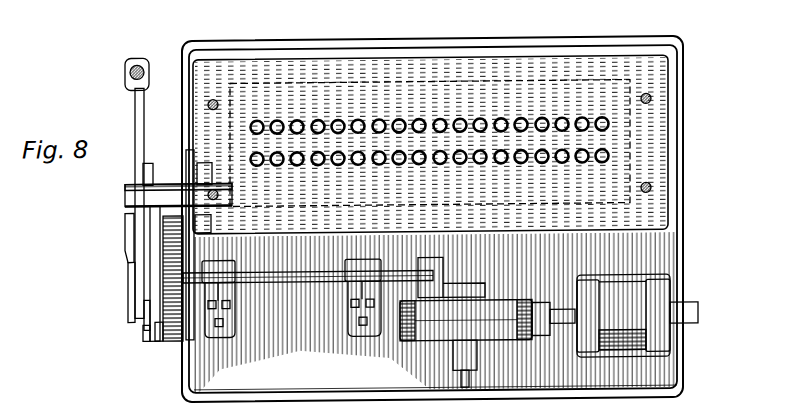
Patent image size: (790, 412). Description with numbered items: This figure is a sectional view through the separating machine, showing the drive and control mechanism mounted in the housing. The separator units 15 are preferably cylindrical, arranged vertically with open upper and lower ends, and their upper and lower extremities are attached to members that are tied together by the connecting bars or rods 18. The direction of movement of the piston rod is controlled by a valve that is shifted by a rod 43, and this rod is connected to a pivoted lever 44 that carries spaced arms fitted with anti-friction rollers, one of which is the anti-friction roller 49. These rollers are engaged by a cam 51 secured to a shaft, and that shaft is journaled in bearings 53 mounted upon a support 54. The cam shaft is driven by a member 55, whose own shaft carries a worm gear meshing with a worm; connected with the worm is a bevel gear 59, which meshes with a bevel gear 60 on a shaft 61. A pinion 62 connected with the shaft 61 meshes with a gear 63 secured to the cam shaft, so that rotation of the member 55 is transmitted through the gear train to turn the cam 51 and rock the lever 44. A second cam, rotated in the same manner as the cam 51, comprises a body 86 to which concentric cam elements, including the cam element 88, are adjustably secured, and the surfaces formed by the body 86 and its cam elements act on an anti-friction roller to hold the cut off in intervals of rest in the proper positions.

The separator units 15 is at (543, 121).
The connecting bars or rods 18 is at (653, 192).
The rod 43 is at (125, 74).
The lever 44 is at (135, 118).
The anti-friction roller 49 is at (125, 274).
The cam 51 is at (128, 306).
The bearings 53 is at (235, 326).
The support 54 is at (684, 51).
The member 55 is at (632, 361).
The bevel gear 59 is at (490, 295).
The bevel gear 60 is at (447, 273).
The shaft 61 is at (286, 284).
The pinion 62 is at (144, 320).
The gear 63 is at (176, 341).
The body 86 is at (150, 342).
The cam element 88 is at (155, 333).